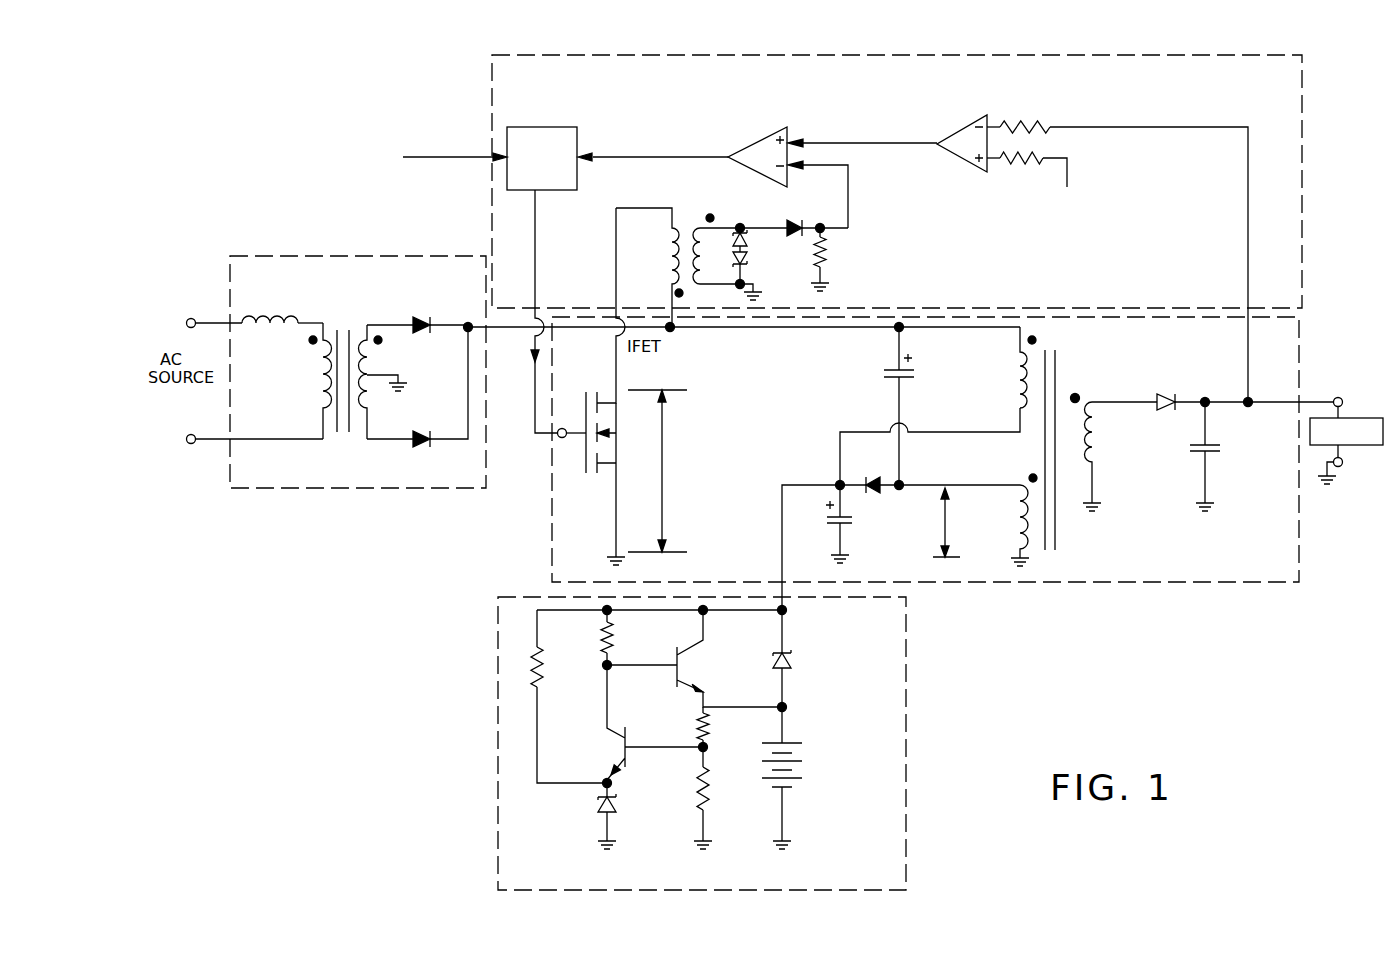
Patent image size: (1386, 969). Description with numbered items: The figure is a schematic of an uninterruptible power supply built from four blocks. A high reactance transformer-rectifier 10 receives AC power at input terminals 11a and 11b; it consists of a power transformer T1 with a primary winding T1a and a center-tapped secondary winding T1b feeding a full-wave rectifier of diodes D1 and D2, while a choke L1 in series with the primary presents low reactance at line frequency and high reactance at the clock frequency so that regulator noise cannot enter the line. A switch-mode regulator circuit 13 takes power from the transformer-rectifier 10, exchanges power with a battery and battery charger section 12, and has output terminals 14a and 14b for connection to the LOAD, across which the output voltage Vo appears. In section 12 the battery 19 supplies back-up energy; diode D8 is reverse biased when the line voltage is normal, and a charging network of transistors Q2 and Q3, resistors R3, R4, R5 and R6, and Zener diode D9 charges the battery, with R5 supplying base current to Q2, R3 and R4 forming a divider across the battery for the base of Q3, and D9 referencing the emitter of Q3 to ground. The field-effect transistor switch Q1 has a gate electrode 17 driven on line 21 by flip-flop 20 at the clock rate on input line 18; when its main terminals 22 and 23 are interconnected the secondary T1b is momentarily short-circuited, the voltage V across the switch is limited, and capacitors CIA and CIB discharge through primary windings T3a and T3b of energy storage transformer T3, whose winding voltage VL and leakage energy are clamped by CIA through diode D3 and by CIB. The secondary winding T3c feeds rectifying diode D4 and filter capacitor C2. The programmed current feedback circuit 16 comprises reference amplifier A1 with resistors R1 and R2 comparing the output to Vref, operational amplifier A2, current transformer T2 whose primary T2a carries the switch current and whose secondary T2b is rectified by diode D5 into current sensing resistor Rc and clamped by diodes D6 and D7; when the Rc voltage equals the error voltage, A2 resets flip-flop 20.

The transformer-rectifier 10 is at (440, 488).
The input terminal 11a is at (208, 308).
The input terminal 11b is at (208, 424).
The choke L1 is at (282, 308).
The power transformer T1 is at (352, 293).
The primary winding T1a is at (322, 381).
The center-tapped secondary winding T1b is at (373, 365).
The diode D1 is at (424, 318).
The diode D2 is at (426, 432).
The battery and battery charger section 12 is at (906, 772).
The switch-mode regulator circuit 13 is at (1299, 546).
The output terminal 14a is at (1336, 397).
The output terminal 14b is at (1343, 465).
The load LOAD is at (1346, 431).
The programmed current feedback circuit 16 is at (1302, 242).
The gate electrode 17 is at (578, 426).
The input line 18 is at (468, 158).
The battery 19 is at (802, 770).
The flip-flop 20 is at (548, 127).
The line 21 is at (535, 270).
The main terminal 22 is at (617, 368).
The main terminal 23 is at (616, 502).
The field-effect transistor switch Q1 is at (586, 432).
The FET drain-source voltage V is at (657, 471).
The reference differential amplifier A1 is at (962, 143).
The differential input operational amplifier A2 is at (757, 177).
The resistor R1 is at (1020, 121).
The resistor R2 is at (1036, 164).
The reference voltage Vref is at (1074, 204).
The current transformer T2 is at (706, 210).
The primary winding T2a is at (668, 248).
The secondary winding T2b is at (692, 287).
The diode D5 is at (796, 220).
The diode D6 is at (734, 241).
The Zener diode D7 is at (752, 262).
The current sensing resistor Rc is at (826, 250).
The capacitor CIA is at (917, 406).
The capacitor CIB is at (856, 524).
The diode D3 is at (878, 478).
The winding voltage VL is at (946, 522).
The energy storage transformer T3 is at (1090, 351).
The primary winding T3a is at (1020, 376).
The primary winding T3b is at (1025, 478).
The secondary winding T3c is at (1090, 440).
The rectifying diode D4 is at (1170, 394).
The filter capacitor C2 is at (1219, 455).
The output voltage Vo is at (1275, 384).
The resistor R3 is at (709, 726).
The resistor R4 is at (709, 793).
The resistor R5 is at (613, 634).
The resistor R6 is at (543, 666).
The transistor Q2 is at (694, 658).
The transistor Q3 is at (641, 726).
The diode D8 is at (791, 660).
The Zener diode D9 is at (618, 800).